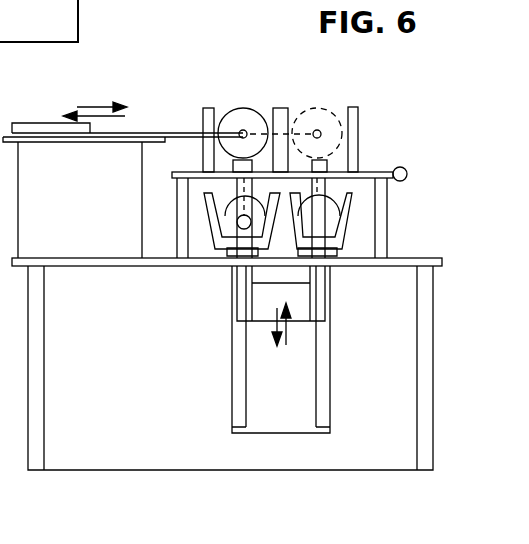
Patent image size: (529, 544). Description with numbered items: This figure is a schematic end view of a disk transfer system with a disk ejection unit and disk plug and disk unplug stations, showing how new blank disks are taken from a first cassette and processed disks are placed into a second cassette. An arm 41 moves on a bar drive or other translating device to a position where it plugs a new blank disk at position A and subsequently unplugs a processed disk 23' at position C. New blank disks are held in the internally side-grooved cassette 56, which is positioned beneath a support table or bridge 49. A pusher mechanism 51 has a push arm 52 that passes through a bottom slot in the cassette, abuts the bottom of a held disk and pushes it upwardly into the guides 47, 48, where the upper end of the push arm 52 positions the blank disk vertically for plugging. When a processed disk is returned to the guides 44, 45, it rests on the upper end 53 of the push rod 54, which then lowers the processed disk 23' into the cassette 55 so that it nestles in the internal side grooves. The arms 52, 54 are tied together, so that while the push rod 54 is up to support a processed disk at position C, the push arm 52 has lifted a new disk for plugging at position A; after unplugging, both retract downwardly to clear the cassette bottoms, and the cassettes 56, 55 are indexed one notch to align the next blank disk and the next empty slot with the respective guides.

The arm 41 is at (181, 131).
The guide 48 is at (227, 112).
The position A is at (238, 118).
The guide 47 is at (267, 106).
The guide 45 is at (295, 106).
The processed disk 23' is at (328, 108).
The position C is at (356, 93).
The guide 44 is at (353, 130).
The upper end of push rod 53 is at (328, 170).
The support table or bridge 49 is at (383, 168).
The push arm 52 is at (231, 163).
The push rod 54 is at (317, 225).
The cassette 55 is at (337, 241).
The cassette 56 is at (218, 236).
The pusher mechanism 51 is at (300, 311).